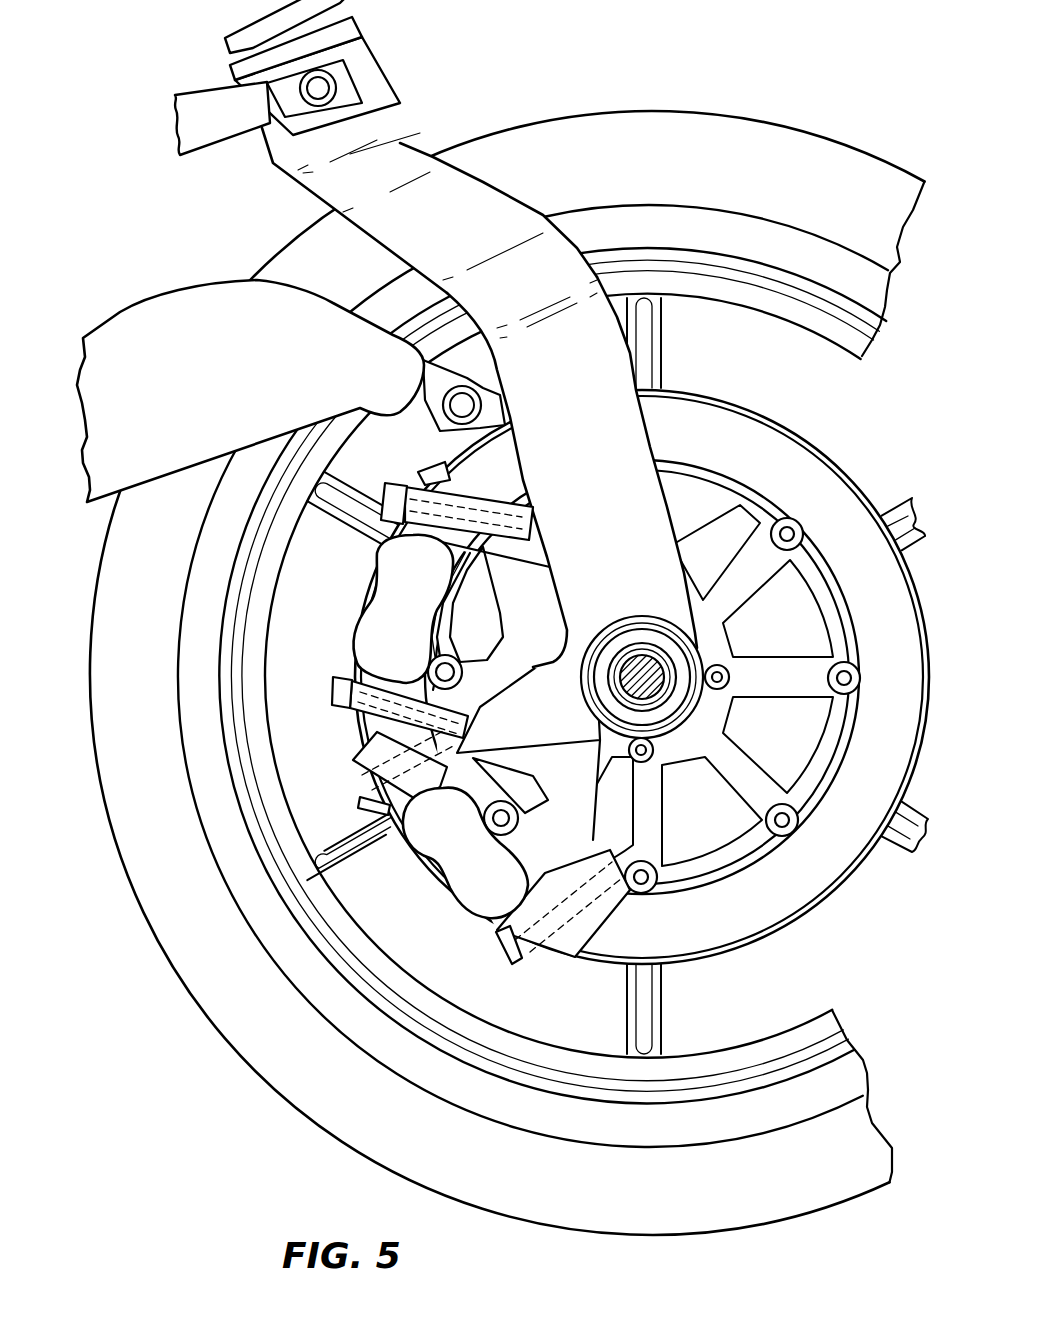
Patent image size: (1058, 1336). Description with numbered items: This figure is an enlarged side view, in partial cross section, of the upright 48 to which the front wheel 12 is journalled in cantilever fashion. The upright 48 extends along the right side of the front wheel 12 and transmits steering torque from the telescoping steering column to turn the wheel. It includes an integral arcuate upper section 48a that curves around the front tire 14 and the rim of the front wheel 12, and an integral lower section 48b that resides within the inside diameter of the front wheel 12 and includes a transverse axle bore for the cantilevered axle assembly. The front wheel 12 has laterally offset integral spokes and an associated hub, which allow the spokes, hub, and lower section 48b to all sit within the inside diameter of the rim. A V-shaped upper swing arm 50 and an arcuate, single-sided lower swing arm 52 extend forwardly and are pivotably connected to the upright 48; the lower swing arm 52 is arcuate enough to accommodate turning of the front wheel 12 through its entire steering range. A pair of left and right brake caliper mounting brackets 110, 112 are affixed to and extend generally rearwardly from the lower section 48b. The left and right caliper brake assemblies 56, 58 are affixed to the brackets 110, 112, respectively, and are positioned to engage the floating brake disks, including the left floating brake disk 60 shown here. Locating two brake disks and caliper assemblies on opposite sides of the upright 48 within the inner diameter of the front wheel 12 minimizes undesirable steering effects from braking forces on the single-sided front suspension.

The front wheel 12 is at (809, 291).
The front tire 14 is at (730, 147).
The upright 48 is at (497, 379).
The upper section 48a is at (458, 200).
The lower section 48b is at (633, 557).
The upper swing arm 50 is at (203, 105).
The lower swing arm 52 is at (143, 337).
The left caliper brake assembly 56 is at (389, 573).
The right caliper brake assembly 58 is at (420, 847).
The left floating brake disk 60 is at (778, 453).
The left brake caliper mounting bracket 110 is at (420, 478).
The right brake caliper mounting bracket 112 is at (600, 905).